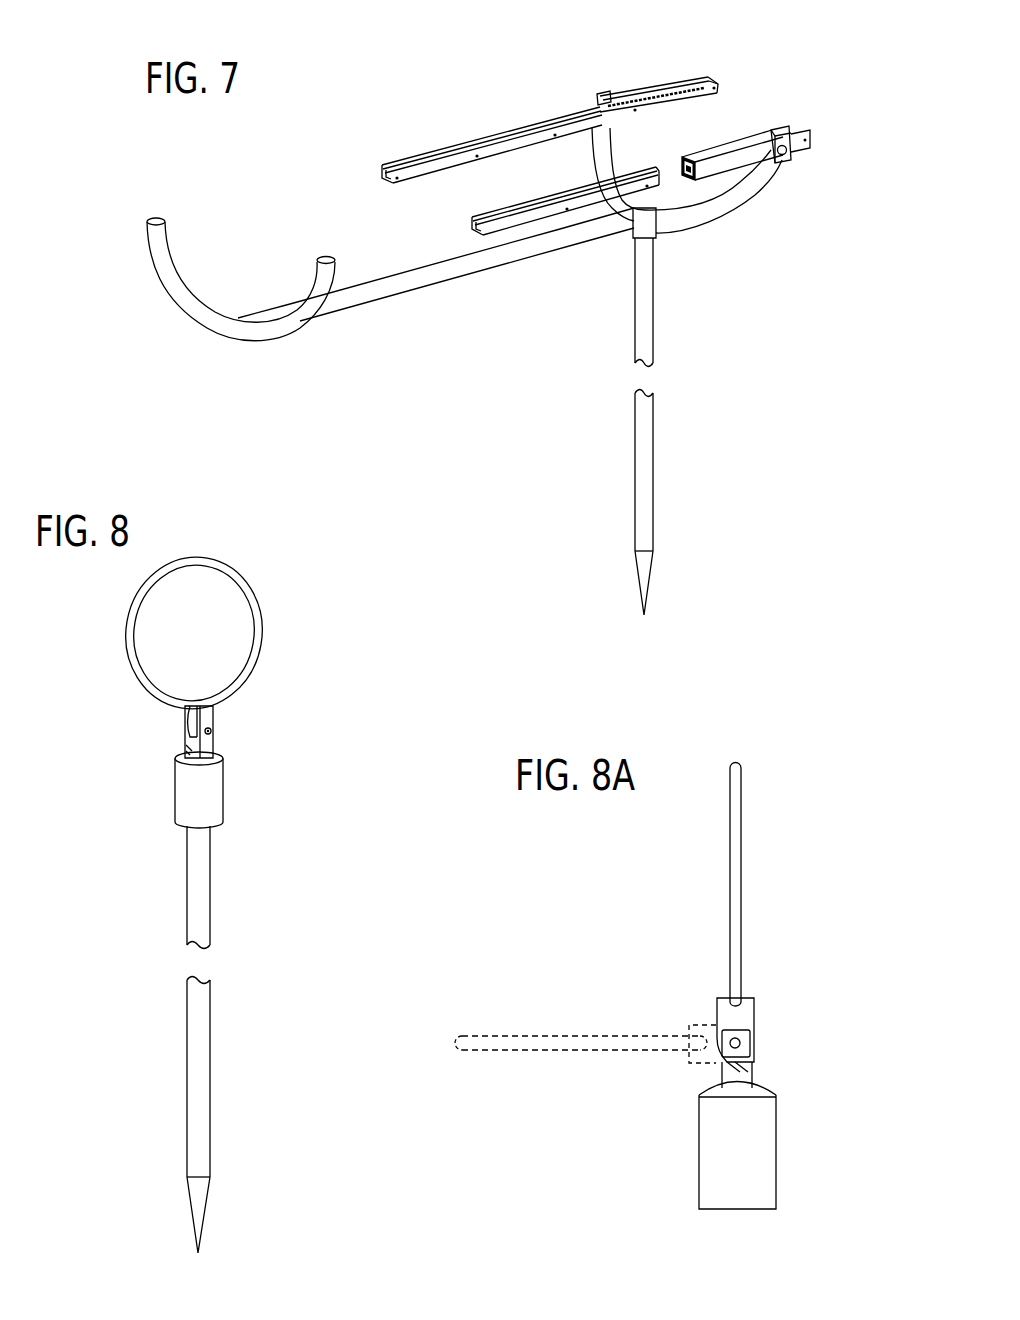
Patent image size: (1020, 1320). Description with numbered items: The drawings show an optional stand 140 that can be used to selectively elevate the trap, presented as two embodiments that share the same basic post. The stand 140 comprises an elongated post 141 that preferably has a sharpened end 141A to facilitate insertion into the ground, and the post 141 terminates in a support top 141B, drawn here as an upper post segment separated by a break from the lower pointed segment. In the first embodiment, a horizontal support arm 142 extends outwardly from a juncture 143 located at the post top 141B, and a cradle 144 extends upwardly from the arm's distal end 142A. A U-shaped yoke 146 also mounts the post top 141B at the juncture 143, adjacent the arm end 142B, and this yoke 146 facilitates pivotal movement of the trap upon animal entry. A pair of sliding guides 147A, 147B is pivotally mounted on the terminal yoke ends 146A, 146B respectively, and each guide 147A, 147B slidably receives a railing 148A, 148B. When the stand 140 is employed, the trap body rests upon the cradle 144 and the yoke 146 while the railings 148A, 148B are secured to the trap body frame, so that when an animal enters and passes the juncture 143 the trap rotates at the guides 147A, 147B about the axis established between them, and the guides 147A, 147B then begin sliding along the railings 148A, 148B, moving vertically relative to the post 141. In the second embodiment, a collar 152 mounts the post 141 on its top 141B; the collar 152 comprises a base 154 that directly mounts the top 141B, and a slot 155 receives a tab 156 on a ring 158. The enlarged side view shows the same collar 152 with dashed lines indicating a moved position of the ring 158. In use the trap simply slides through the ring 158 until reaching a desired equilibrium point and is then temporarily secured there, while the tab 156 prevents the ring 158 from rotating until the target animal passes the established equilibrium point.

In FIG. 7, the stand 140 is at (216, 395).
In FIG. 7, the post 141 is at (647, 321).
In FIG. 8, the post 141 is at (200, 920).
In FIG. 7, the sharpened end 141A is at (647, 605).
In FIG. 8, the sharpened end 141A is at (200, 1242).
In FIG. 7, the support top 141B is at (656, 237).
In FIG. 8, the support top 141B is at (212, 828).
In FIG. 7, the horizontal support arm 142 is at (447, 276).
In FIG. 7, the distal end 142A is at (238, 318).
In FIG. 7, the arm end 142B is at (623, 226).
In FIG. 7, the juncture 143 is at (640, 238).
In FIG. 7, the cradle 144 is at (148, 250).
In FIG. 7, the U-shaped yoke 146 is at (742, 190).
In FIG. 7, the terminal yoke end 146A is at (787, 125).
In FIG. 7, the terminal yoke end 146B is at (603, 93).
In FIG. 7, the sliding guide 147A is at (732, 146).
In FIG. 7, the sliding guide 147B is at (669, 84).
In FIG. 7, the railing 148A is at (481, 212).
In FIG. 7, the railing 148B is at (436, 148).
In FIG. 8, the collar 152 is at (306, 626).
In FIG. 8A, the collar 152 is at (802, 812).
In FIG. 8, the base 154 is at (220, 790).
In FIG. 8A, the base 154 is at (757, 1151).
In FIG. 8, the slot 155 is at (213, 744).
In FIG. 8A, the slot 155 is at (752, 1052).
In FIG. 8, the tab 156 is at (185, 718).
In FIG. 8A, the tab 156 is at (748, 1020).
In FIG. 8, the ring 158 is at (248, 684).
In FIG. 8A, the ring 158 is at (740, 906).